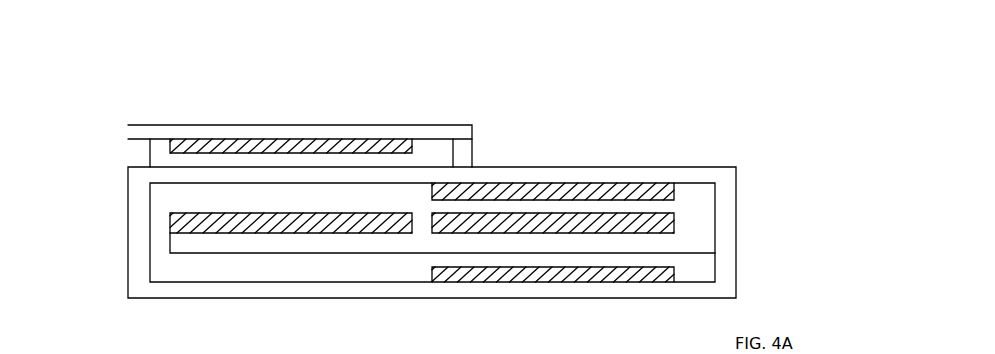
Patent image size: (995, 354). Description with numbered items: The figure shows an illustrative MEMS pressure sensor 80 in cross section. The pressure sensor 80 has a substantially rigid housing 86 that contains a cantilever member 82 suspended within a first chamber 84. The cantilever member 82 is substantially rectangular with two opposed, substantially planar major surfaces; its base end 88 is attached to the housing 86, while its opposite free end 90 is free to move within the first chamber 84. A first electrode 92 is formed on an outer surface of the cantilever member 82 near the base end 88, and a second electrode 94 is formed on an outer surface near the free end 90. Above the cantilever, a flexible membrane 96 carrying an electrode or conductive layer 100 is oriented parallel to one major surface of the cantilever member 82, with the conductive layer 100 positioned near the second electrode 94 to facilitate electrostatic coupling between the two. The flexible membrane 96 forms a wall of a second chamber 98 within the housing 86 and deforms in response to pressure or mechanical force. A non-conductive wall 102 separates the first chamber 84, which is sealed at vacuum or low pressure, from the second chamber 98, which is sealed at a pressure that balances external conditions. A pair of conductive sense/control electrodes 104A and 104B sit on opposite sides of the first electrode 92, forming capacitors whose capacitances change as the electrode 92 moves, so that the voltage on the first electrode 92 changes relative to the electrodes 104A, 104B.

The MEMS pressure sensor 80 is at (638, 80).
The cantilever member 82 is at (172, 245).
The first chamber 84 is at (692, 196).
The substantially rigid housing 86 is at (737, 200).
The base end 88 is at (700, 258).
The free end 90 is at (190, 255).
The first electrode 92 is at (553, 210).
The second electrode 94 is at (170, 213).
The flexible membrane 96 is at (193, 125).
The second chamber 98 is at (442, 143).
The conductive layer 100 is at (350, 140).
The non-conductive wall 102 is at (177, 175).
The sense/control electrode 104A is at (520, 182).
The sense/control electrode 104B is at (520, 283).